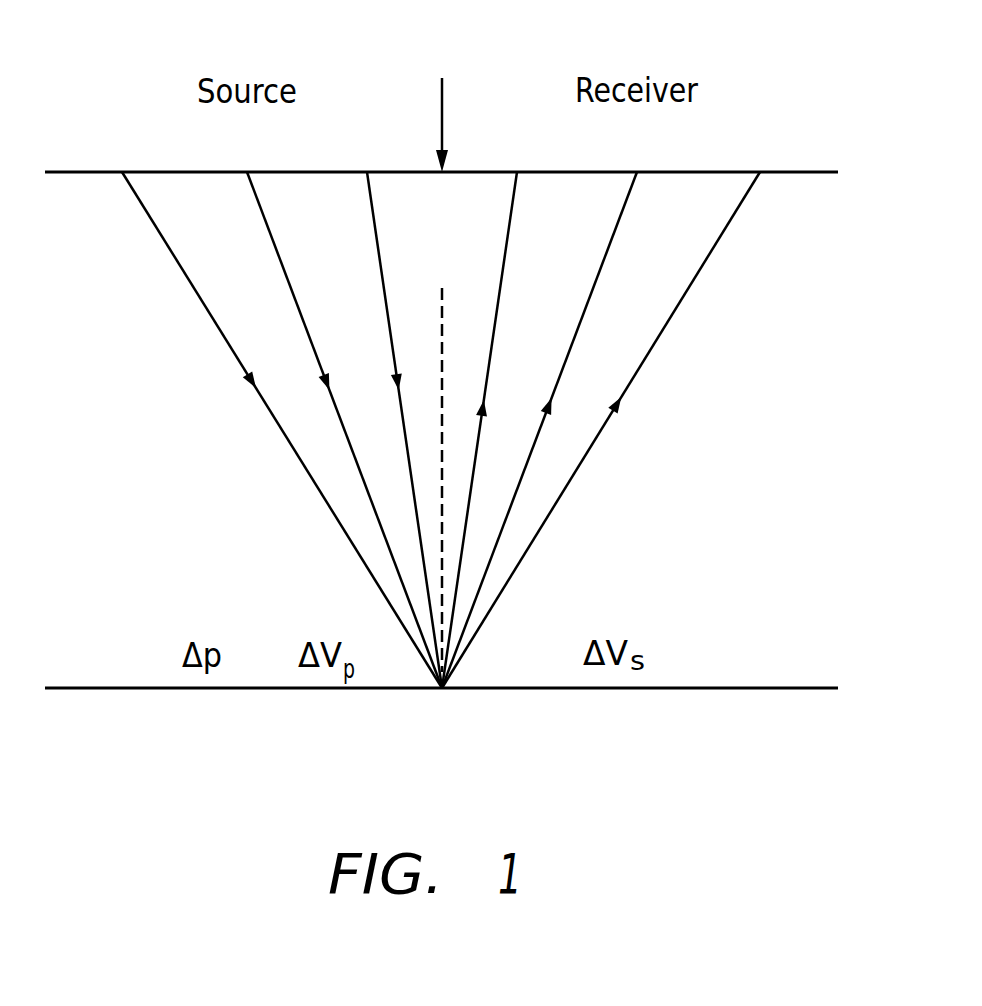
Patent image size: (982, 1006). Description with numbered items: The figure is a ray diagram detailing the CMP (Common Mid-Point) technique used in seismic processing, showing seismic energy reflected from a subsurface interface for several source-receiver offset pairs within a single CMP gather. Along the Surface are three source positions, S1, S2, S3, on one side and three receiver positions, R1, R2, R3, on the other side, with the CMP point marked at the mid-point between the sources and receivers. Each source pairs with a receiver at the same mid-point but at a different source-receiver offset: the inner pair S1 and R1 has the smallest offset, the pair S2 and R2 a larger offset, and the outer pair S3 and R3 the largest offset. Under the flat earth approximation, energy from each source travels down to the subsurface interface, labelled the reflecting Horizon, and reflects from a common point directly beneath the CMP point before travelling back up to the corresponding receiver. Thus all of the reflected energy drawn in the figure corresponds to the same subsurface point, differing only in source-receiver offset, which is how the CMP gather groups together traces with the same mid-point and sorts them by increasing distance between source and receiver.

The source S1 is at (395, 409).
The source S2 is at (334, 409).
The source S3 is at (272, 409).
The receiver R1 is at (487, 409).
The receiver R2 is at (548, 409).
The receiver R3 is at (610, 409).
The CMP point CMP is at (443, 87).
The surface Surface is at (466, 196).
The reflecting horizon Horizon is at (441, 731).